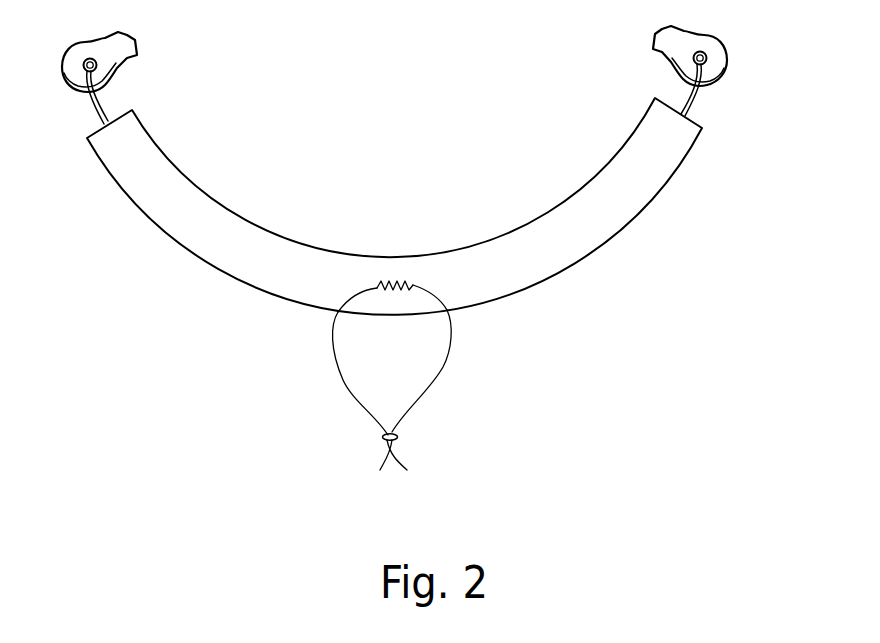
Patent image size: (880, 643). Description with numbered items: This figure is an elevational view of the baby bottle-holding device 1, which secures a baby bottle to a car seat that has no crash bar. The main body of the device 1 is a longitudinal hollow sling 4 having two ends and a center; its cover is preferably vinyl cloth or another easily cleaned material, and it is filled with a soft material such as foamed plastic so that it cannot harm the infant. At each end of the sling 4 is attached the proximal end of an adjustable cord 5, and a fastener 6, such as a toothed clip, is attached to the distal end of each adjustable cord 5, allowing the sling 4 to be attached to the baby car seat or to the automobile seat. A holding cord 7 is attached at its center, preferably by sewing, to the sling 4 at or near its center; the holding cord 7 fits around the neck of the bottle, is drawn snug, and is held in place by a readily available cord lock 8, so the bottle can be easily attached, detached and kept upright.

The baby bottle-holding device 1 is at (266, 313).
The longitudinal hollow sling 4 is at (567, 243).
The adjustable cord 5 is at (686, 102).
The fastener 6 is at (653, 42).
The holding cord 7 is at (447, 362).
The cord lock 8 is at (398, 437).